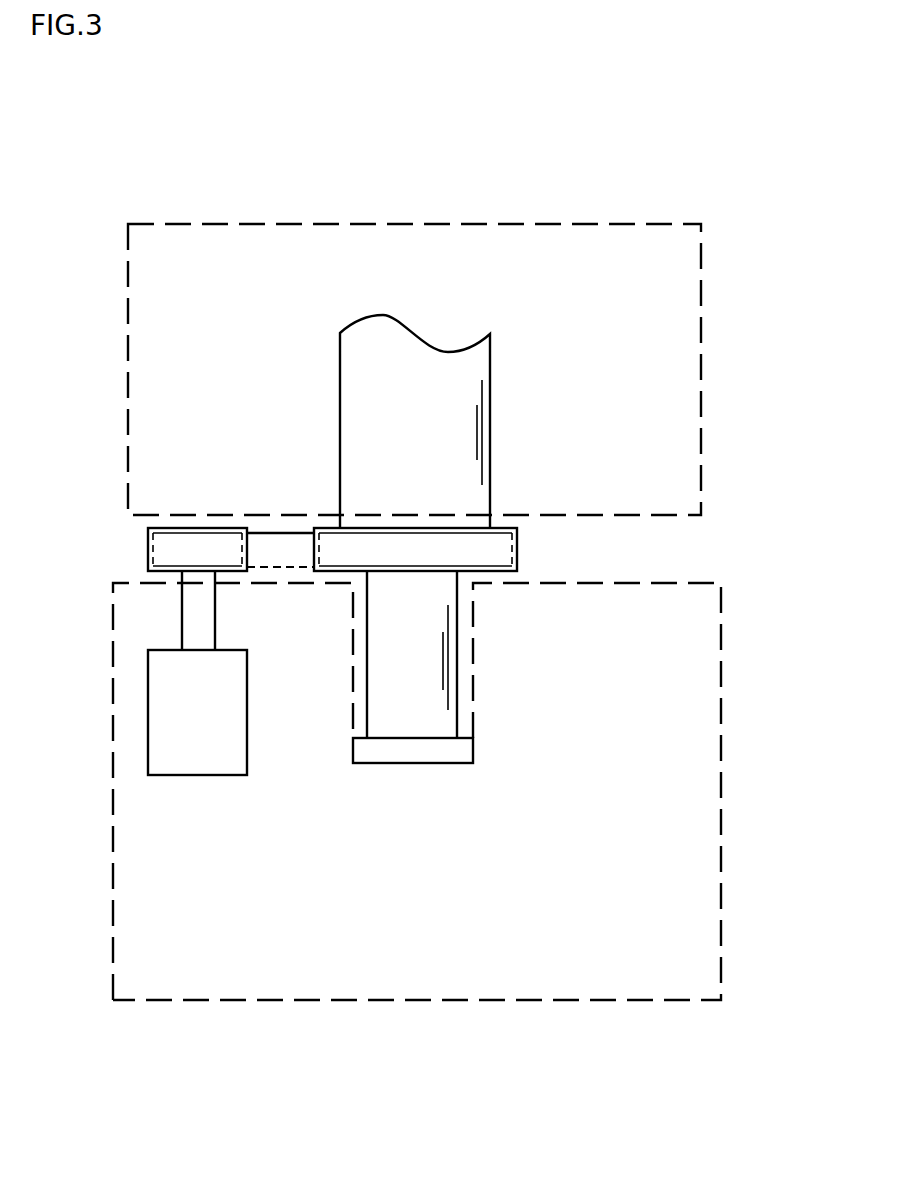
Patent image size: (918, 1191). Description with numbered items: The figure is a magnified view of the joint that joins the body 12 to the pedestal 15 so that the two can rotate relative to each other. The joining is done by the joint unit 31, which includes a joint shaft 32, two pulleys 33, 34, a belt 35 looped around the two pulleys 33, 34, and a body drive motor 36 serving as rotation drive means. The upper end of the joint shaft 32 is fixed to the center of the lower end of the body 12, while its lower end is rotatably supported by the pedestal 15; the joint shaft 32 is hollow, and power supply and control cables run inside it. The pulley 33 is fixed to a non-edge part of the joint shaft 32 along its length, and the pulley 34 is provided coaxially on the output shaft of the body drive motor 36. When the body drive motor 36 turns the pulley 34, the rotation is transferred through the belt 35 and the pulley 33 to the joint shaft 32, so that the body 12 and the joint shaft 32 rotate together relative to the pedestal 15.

The body 12 is at (701, 278).
The pedestal 15 is at (721, 762).
The joint unit 31 is at (399, 545).
The joint shaft 32 is at (347, 417).
The pulley 33 is at (510, 527).
The pulley 34 is at (163, 526).
The belt 35 is at (278, 555).
The body drive motor 36 is at (168, 737).